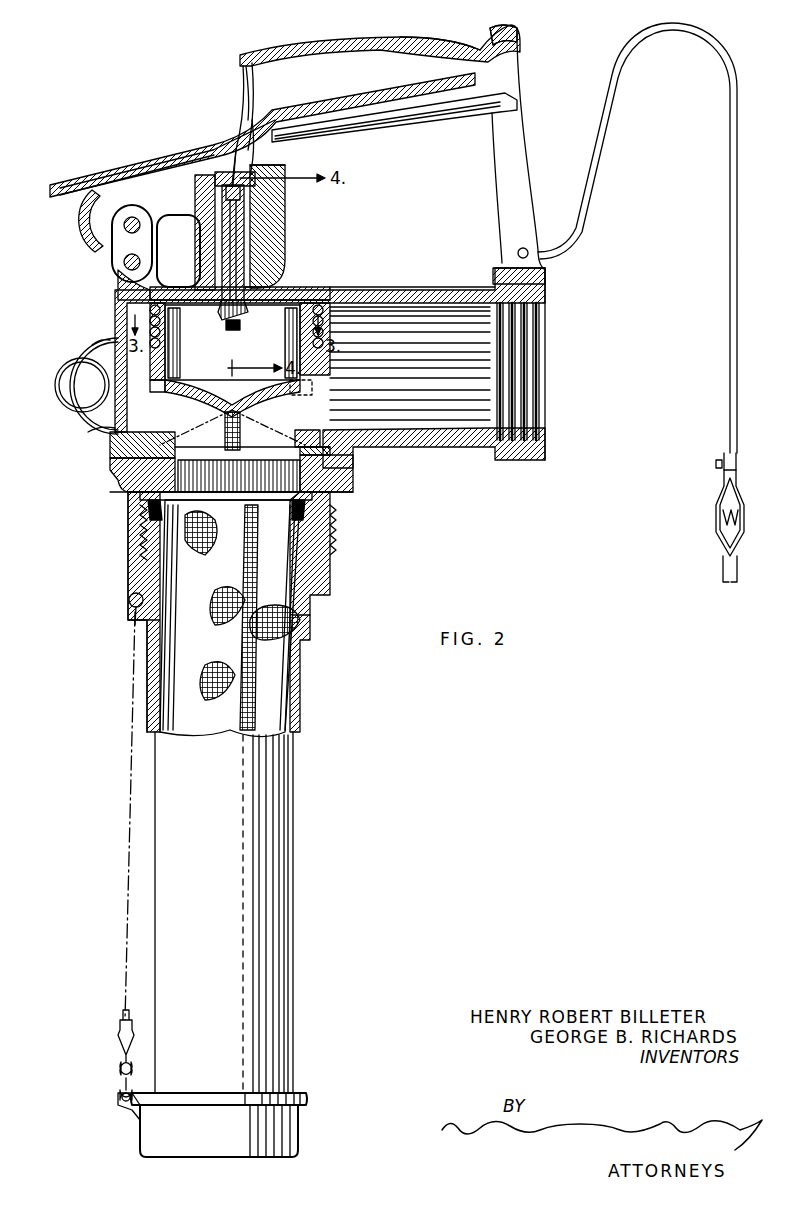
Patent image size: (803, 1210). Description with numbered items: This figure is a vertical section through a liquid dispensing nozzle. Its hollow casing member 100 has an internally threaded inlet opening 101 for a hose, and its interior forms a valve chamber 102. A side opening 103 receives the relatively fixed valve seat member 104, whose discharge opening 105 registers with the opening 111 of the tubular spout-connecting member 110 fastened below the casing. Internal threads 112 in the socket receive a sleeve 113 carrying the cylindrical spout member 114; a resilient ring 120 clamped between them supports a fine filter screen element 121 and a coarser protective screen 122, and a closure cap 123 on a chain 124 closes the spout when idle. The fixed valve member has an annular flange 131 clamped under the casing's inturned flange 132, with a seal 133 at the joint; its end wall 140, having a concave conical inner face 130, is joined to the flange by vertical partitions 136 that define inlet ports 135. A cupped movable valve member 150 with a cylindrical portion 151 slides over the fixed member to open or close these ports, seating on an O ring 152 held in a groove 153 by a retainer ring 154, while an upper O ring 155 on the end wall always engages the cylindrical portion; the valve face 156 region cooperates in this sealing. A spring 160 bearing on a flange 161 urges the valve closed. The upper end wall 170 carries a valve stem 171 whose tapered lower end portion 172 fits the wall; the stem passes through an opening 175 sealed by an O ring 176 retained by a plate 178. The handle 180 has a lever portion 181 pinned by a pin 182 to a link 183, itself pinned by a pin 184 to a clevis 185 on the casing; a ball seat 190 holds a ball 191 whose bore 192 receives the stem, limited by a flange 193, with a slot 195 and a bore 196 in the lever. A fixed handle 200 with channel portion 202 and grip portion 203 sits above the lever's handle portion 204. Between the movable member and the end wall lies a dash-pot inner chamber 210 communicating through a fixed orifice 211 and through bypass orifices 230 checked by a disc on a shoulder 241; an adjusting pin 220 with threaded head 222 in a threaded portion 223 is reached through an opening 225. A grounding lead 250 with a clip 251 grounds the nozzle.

The casing member 100 is at (114, 335).
The inlet opening 101 is at (528, 378).
The valve chamber 102 is at (445, 418).
The opening 103 is at (318, 440).
The valve seat member 104 is at (214, 406).
The discharge opening 105 is at (335, 490).
The spout-connecting member 110 is at (325, 552).
The opening 111 is at (255, 500).
The internal threads 112 is at (135, 540).
The sleeve 113 is at (130, 575).
The spout member 114 is at (294, 705).
The ring 120 is at (322, 512).
The filter screen element 121 is at (285, 612).
The protective screen 122 is at (292, 625).
The closure cap 123 is at (165, 1141).
The chain 124 is at (115, 1035).
The inner face 130 is at (152, 392).
The annular flange 131 is at (195, 445).
The inturned flange 132 is at (135, 455).
The seal 133 is at (335, 475).
The inlet ports 135 is at (110, 428).
The vertical partitions 136 is at (239, 476).
The end wall 140 is at (236, 406).
The movable valve member 150 is at (304, 380).
The cylindrical portion 151 is at (335, 335).
The O ring 152 is at (300, 428).
The groove 153 is at (240, 445).
The retainer ring 154 is at (122, 436).
The O ring 155 is at (147, 390).
The valve face 156 is at (250, 412).
The spring 160 is at (118, 360).
The flange 161 is at (150, 365).
The upper end wall 170 is at (190, 302).
The valve stem 171 is at (252, 250).
The tapered lower end portion 172 is at (232, 342).
The opening 175 is at (232, 292).
The O ring 176 is at (258, 296).
The plate 178 is at (205, 292).
The handle 180 is at (140, 195).
The lever portion 181 is at (122, 180).
The pin 182 is at (124, 228).
The link 183 is at (120, 251).
The pin 184 is at (124, 264).
The clevis 185 is at (148, 272).
The ball seat 190 is at (200, 240).
The ball 191 is at (280, 205).
The bore 192 is at (247, 214).
The flange 193 is at (220, 152).
The slot 195 is at (212, 252).
The bore 196 is at (246, 150).
The handle 200 is at (236, 52).
The channel portion 202 is at (95, 200).
The grip portion 203 is at (287, 48).
The handle portion 204 is at (464, 102).
The inner chamber 210 is at (300, 385).
The orifice 211 is at (335, 300).
The adjusting pin 220 is at (246, 240).
The head 222 is at (256, 182).
The internally threaded portion 223 is at (240, 180).
The opening 225 is at (250, 120).
The orifices 230 is at (250, 338).
The shoulder 241 is at (216, 340).
The grounding lead 250 is at (725, 258).
The clip 251 is at (716, 510).